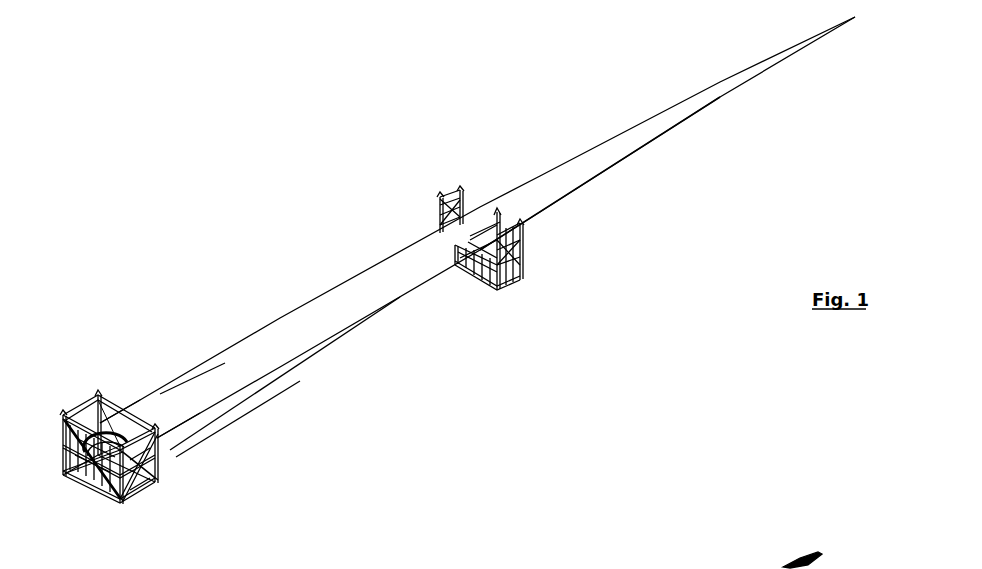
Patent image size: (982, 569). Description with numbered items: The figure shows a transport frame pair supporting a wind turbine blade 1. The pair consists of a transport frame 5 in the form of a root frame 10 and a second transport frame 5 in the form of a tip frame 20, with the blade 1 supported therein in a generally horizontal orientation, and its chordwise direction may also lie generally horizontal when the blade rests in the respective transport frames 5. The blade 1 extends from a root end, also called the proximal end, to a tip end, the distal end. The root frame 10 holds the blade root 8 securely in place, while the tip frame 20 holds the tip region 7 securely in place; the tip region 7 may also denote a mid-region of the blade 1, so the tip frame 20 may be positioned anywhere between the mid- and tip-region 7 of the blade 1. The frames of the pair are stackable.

The wind turbine blade 1 is at (238, 264).
The transport frame 5 is at (348, 455).
The tip region 7 is at (575, 200).
The blade root 8 is at (138, 358).
The root frame 10 is at (85, 385).
The tip frame 20 is at (466, 170).